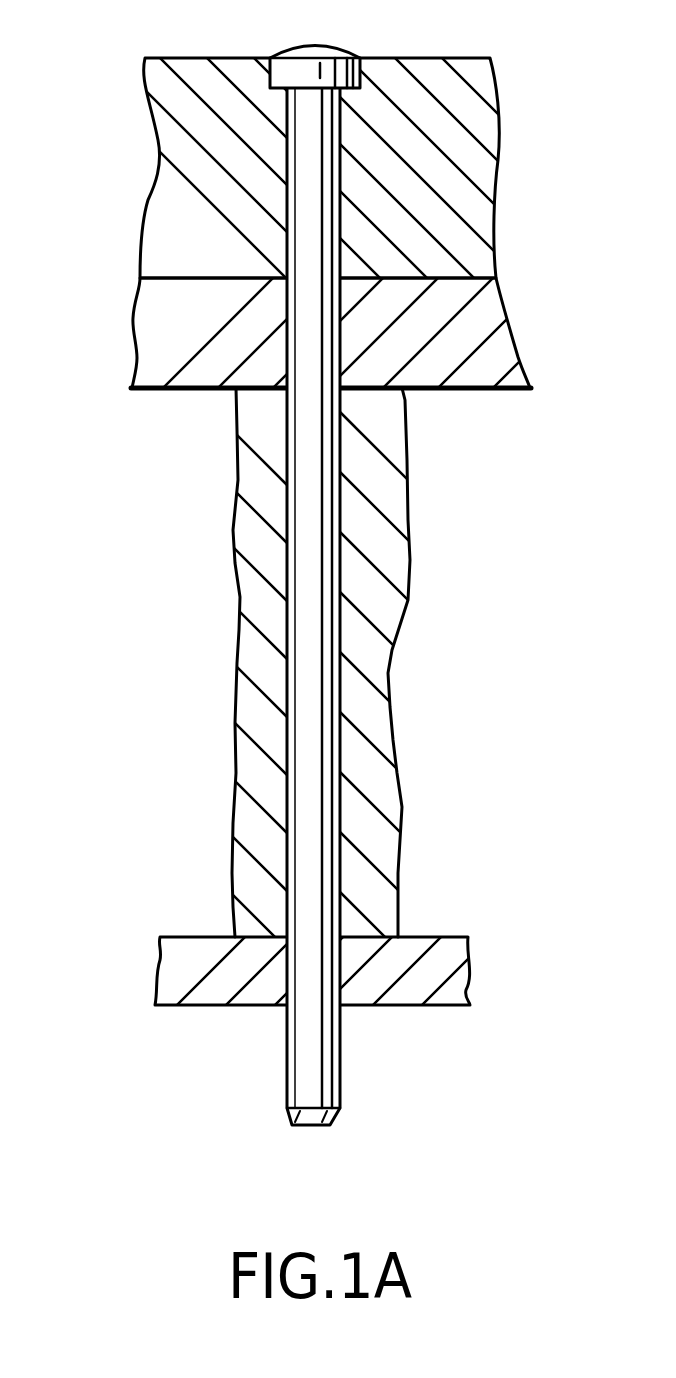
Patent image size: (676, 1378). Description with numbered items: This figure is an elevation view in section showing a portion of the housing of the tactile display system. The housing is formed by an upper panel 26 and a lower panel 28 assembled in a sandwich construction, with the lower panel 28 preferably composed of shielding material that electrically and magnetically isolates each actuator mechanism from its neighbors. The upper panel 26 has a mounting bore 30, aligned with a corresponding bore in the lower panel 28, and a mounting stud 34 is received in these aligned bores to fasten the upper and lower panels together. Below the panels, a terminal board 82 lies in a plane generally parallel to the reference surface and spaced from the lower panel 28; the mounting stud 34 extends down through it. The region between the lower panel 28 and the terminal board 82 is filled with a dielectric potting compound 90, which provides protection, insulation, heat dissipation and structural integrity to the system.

The upper panel 26 is at (165, 198).
The lower panel 28 is at (153, 356).
The mounting bore 30 is at (278, 72).
The mounting stud 34 is at (331, 121).
The terminal board 82 is at (228, 986).
The dielectric potting compound 90 is at (247, 590).